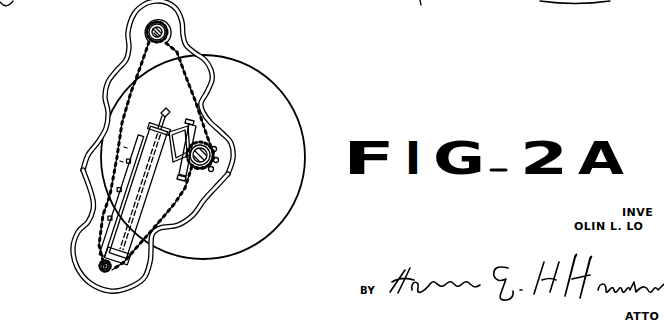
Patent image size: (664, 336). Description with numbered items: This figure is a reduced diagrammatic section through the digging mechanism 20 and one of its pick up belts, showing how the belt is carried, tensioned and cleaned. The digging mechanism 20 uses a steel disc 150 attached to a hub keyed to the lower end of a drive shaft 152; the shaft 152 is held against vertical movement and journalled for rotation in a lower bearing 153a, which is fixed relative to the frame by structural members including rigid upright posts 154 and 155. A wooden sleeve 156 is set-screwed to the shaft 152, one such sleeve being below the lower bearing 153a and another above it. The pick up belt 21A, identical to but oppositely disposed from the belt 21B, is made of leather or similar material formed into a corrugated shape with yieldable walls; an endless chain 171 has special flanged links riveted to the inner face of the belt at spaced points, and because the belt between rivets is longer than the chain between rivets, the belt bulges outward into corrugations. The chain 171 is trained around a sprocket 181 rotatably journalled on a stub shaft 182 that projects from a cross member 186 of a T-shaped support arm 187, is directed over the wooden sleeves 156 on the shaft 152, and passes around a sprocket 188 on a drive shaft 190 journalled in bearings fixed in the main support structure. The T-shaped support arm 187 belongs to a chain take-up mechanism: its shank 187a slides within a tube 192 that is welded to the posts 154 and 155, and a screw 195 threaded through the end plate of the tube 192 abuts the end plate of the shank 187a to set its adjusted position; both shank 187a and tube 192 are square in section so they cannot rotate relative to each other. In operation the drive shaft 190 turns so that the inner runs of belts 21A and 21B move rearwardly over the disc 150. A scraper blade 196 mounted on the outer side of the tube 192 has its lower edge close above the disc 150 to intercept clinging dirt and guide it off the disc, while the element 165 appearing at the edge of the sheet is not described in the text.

The circular frame 150 is at (279, 98).
The mounting bracket 192 is at (108, 112).
The bracket lower portion 21A is at (150, 274).
The upper sprocket 188 is at (170, 31).
The sprocket hub 190 is at (164, 24).
The chain 171 is at (188, 83).
The hydraulic cylinder 154 is at (174, 121).
The piston rod end 195 is at (162, 115).
The yoke 155 is at (177, 227).
The mounting plate 153a is at (198, 169).
The drive sprocket 152 is at (208, 150).
The rollers 156 is at (217, 163).
The guide rod 196 is at (123, 210).
The rod lugs 187a is at (122, 222).
The rod 187 is at (117, 232).
The cylinder end cap 186 is at (106, 244).
The lower sprocket 181 is at (128, 276).
The sprocket pin 182 is at (124, 276).
The frame 20 is at (418, 13).
The frame portion 21B is at (602, 10).
The frame member 165 is at (30, 4).